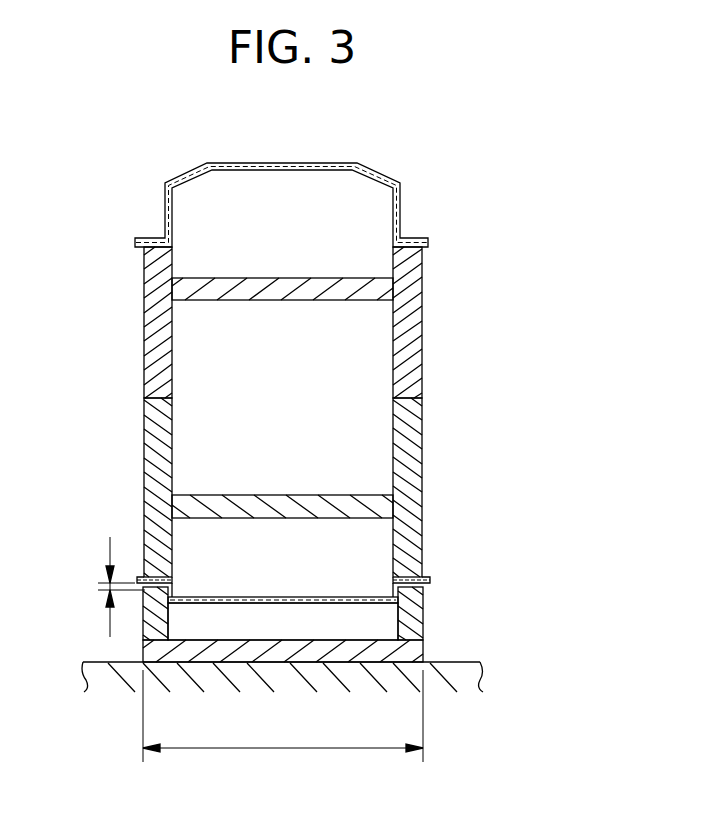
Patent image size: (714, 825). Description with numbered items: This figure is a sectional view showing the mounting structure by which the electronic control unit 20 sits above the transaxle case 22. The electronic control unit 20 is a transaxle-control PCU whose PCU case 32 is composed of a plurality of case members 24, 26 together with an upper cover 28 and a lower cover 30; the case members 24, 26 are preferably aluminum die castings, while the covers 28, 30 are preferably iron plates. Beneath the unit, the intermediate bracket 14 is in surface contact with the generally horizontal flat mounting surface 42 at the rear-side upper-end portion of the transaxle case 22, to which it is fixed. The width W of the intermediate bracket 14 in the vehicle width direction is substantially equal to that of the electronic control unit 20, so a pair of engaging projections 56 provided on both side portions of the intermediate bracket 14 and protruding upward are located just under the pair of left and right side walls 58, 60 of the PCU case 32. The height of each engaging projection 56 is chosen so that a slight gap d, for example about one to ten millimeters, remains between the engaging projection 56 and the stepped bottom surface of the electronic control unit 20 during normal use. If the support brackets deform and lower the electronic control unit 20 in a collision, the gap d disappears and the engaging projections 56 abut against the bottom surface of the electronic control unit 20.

The intermediate bracket 14 is at (244, 652).
The electronic control unit 20 is at (510, 168).
The transaxle case 22 is at (467, 675).
The case member 24 is at (427, 330).
The case member 26 is at (140, 450).
The upper cover 28 is at (278, 166).
The lower cover 30 is at (292, 605).
The PCU case 32 is at (80, 223).
The mounting surface 42 is at (335, 656).
The engaging projection 56 is at (152, 628).
The side wall 58 is at (162, 515).
The side wall 60 is at (412, 522).
The gap d is at (109, 587).
The width W is at (283, 729).